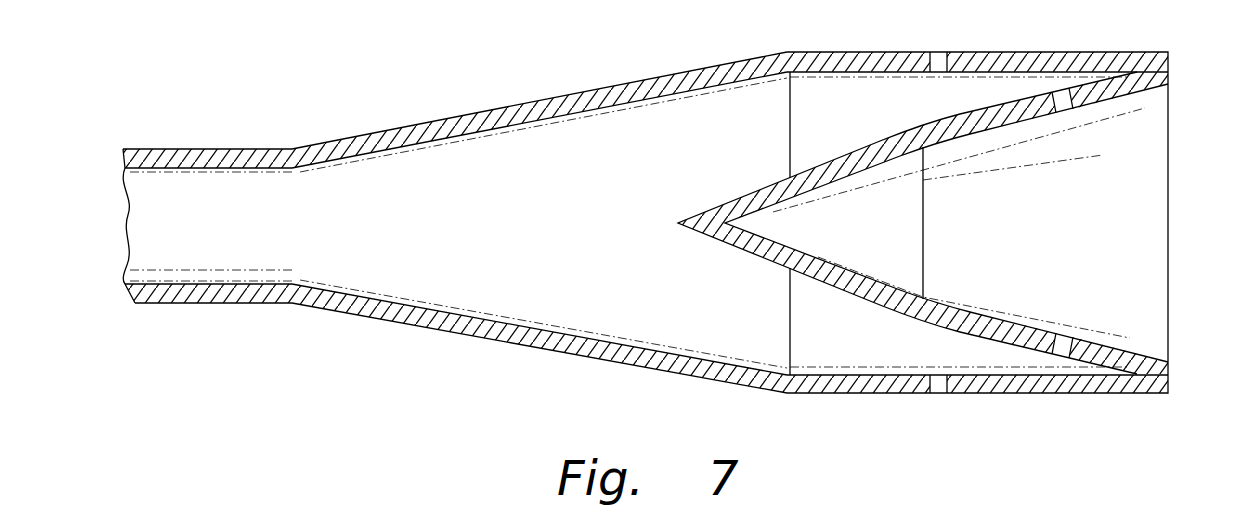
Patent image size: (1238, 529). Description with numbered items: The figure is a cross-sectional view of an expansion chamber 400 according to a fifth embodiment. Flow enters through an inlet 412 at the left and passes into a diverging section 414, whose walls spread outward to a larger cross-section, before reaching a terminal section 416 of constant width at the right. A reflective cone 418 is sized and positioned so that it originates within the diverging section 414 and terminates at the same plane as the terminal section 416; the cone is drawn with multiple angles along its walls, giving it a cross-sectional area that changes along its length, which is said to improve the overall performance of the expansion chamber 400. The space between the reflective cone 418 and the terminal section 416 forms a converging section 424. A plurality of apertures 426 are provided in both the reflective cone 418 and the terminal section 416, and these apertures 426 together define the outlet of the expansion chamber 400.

The expansion chamber 400 is at (668, 234).
The inlet 412 is at (130, 148).
The diverging section 414 is at (516, 217).
The terminal section 416 is at (833, 52).
The reflective cone 418 is at (781, 181).
The converging section 424 is at (779, 338).
The apertures 426 is at (956, 37).